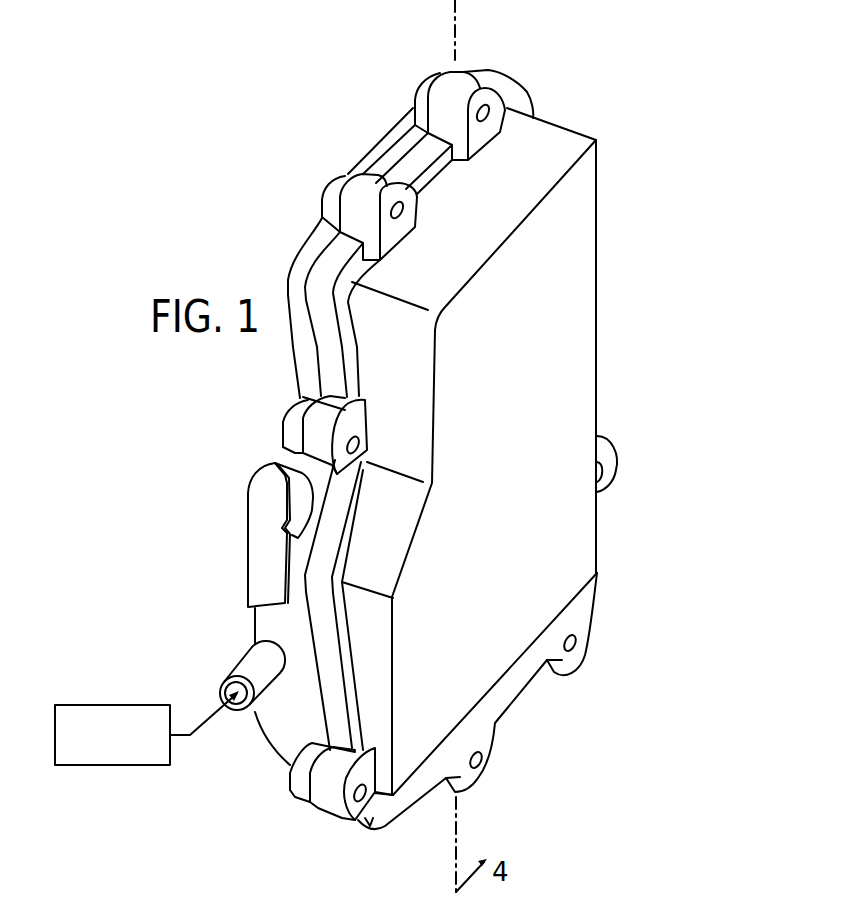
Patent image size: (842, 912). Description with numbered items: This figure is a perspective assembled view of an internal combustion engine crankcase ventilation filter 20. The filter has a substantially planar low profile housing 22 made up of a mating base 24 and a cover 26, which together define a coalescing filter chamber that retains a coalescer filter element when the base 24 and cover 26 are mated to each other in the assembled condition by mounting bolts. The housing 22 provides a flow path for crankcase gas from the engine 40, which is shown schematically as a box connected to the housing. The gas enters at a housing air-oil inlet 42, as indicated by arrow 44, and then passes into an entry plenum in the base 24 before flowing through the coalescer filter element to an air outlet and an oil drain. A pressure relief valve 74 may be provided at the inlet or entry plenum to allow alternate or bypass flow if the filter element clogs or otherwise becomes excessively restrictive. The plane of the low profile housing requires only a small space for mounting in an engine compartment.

The internal combustion engine crankcase ventilation filter 20 is at (637, 298).
The housing 22 is at (596, 405).
The base 24 is at (305, 260).
The cover 26 is at (500, 77).
The pressure relief valve 74 is at (263, 485).
The housing air-oil inlet 42 is at (222, 688).
The engine 40 is at (112, 705).
The arrow 44 is at (205, 722).